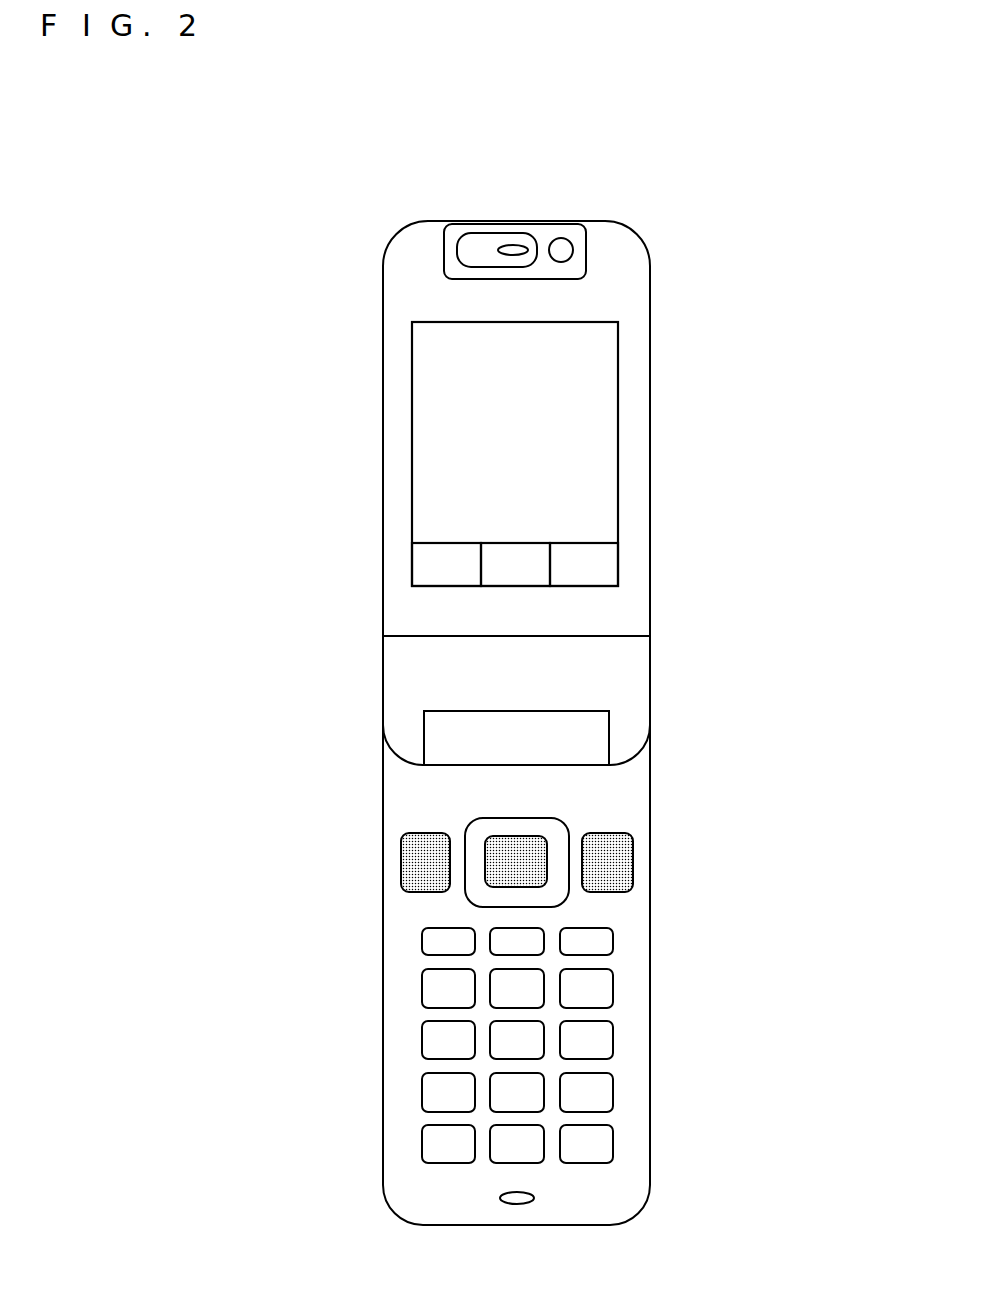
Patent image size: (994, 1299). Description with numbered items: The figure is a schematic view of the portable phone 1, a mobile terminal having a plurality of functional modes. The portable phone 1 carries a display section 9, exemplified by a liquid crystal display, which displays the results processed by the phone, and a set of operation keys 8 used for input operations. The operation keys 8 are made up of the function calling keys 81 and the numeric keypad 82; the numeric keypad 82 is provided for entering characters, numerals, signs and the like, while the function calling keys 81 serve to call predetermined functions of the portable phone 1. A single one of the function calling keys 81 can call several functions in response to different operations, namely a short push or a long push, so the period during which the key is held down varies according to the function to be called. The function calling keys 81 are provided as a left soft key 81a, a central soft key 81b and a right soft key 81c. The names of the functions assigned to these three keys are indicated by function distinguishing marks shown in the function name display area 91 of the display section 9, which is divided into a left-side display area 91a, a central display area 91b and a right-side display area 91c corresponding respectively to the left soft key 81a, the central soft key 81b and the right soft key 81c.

The portable phone 1 is at (723, 210).
The display section 9 is at (607, 380).
The function name display area 91 is at (568, 527).
The left-side display area 91a is at (425, 571).
The central display area 91b is at (514, 554).
The right-side display area 91c is at (607, 570).
The operation keys 8 is at (812, 747).
The function calling keys 81 is at (740, 748).
The left soft key 81a is at (430, 840).
The central soft key 81b is at (530, 852).
The right soft key 81c is at (608, 870).
The numeric keypad 82 is at (602, 942).